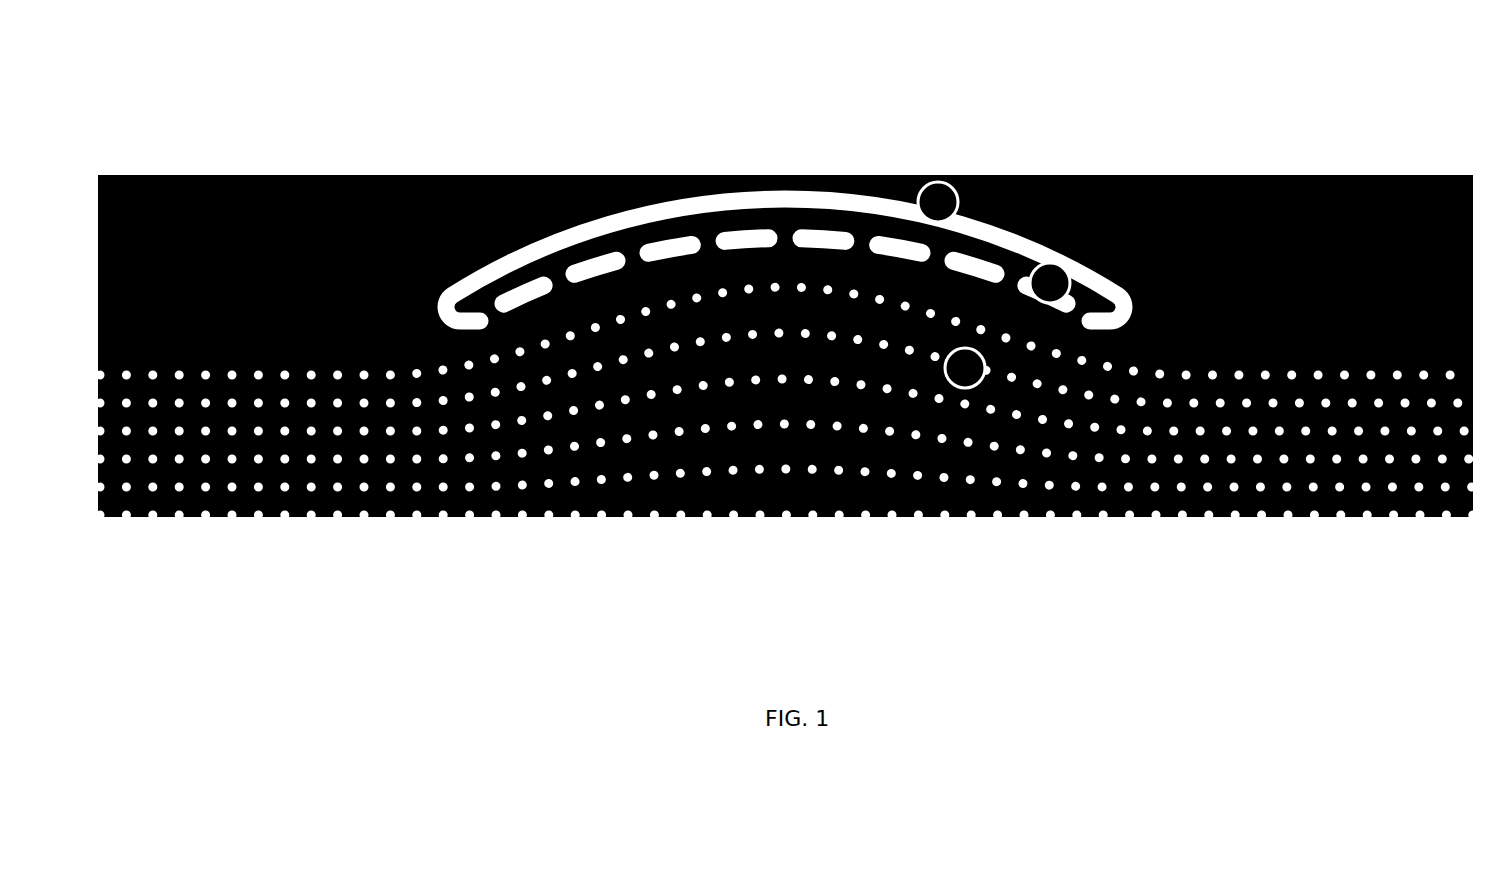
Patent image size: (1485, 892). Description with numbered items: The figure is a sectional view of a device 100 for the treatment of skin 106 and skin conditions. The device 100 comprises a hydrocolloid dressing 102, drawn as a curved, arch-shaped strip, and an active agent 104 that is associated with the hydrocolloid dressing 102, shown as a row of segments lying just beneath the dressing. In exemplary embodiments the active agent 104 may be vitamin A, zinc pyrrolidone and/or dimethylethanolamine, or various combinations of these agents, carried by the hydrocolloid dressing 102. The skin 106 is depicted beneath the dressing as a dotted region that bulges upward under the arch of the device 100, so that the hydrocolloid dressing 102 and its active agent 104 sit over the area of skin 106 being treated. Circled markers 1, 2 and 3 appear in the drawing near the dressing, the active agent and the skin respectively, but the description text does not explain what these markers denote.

The device 100 is at (853, 158).
The hydrocolloid dressing 102 is at (690, 205).
The active agent 104 is at (572, 268).
The skin 106 is at (760, 300).
The first zone 1 is at (938, 202).
The second zone 2 is at (965, 368).
The third zone 3 is at (1050, 283).